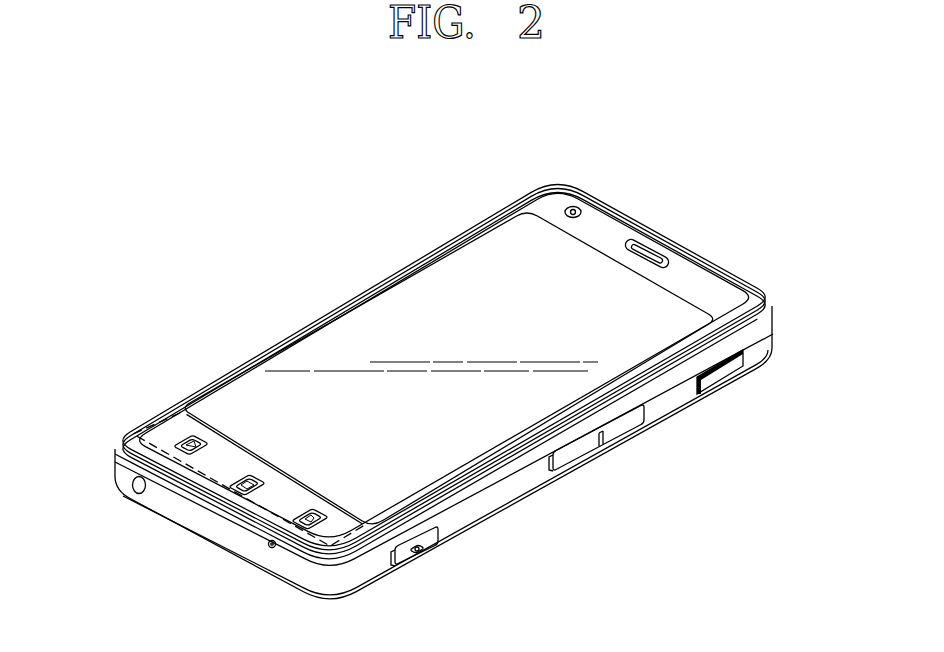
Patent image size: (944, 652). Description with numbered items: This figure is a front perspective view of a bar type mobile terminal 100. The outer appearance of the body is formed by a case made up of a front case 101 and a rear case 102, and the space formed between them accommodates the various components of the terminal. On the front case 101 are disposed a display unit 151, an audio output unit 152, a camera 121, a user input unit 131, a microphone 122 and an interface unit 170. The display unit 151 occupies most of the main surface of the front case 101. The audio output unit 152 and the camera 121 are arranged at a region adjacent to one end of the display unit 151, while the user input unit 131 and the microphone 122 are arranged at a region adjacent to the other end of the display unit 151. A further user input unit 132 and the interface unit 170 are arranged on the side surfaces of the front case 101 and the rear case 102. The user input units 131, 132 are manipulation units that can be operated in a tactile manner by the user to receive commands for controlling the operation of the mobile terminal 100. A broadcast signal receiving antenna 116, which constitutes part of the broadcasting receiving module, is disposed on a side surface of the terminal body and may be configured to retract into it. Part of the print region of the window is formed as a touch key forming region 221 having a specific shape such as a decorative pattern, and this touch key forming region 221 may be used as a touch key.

The mobile terminal 100 is at (399, 233).
The front case 101 is at (764, 328).
The rear case 102 is at (764, 347).
The broadcast signal receiving antenna 116 is at (134, 489).
The camera 121 is at (582, 209).
The microphone 122 is at (270, 548).
The user input unit 131 is at (140, 431).
The user input unit 132 is at (580, 460).
The display unit 151 is at (316, 329).
The audio output unit 152 is at (648, 254).
The interface unit 170 is at (734, 373).
The touch key forming region 221 is at (189, 440).